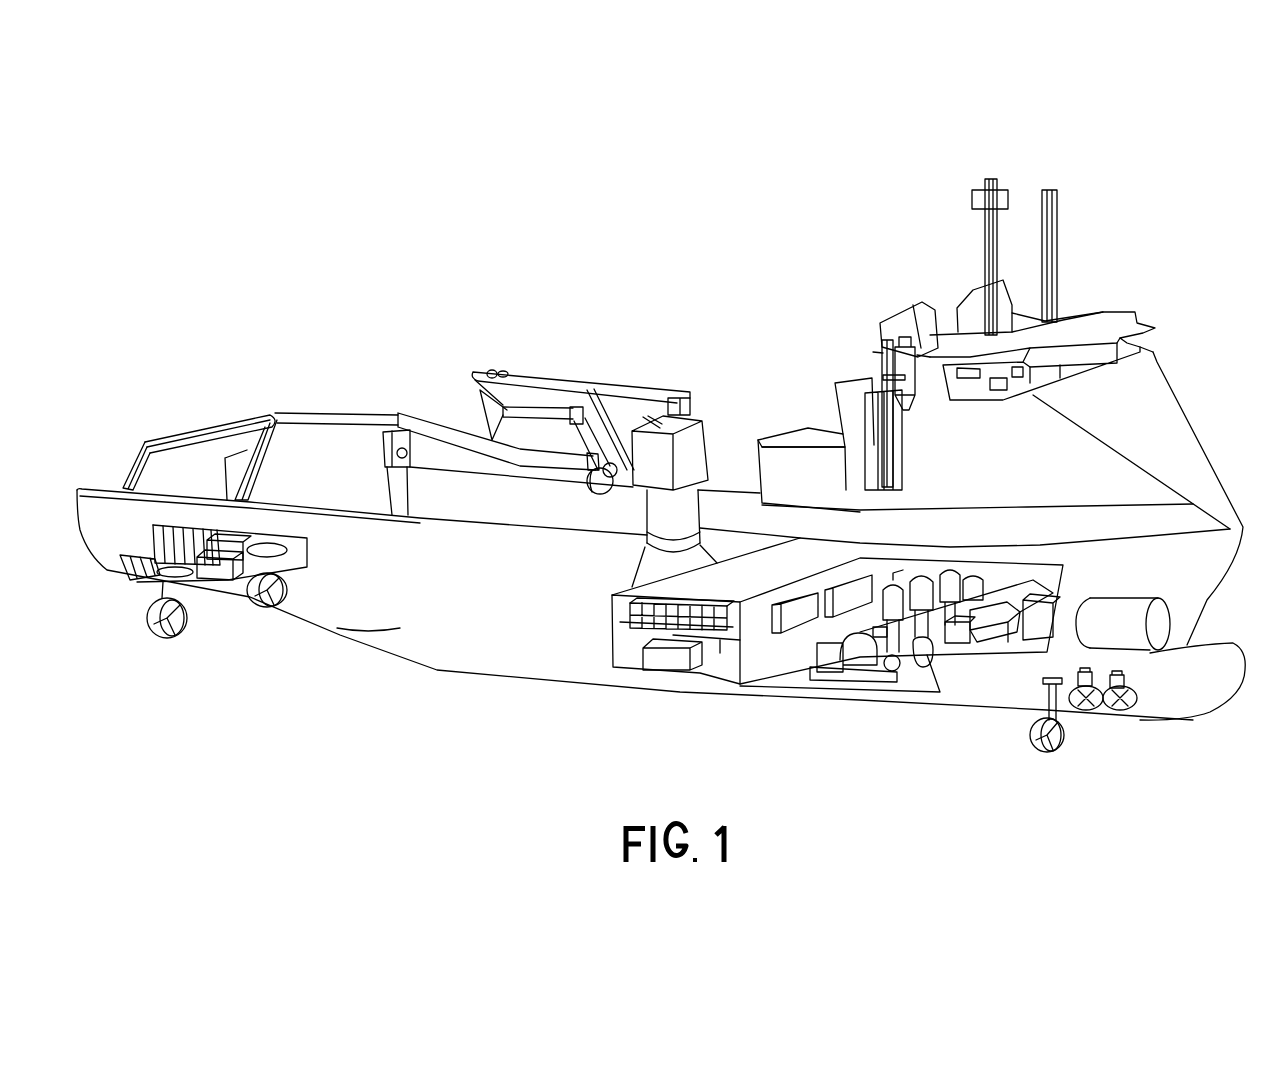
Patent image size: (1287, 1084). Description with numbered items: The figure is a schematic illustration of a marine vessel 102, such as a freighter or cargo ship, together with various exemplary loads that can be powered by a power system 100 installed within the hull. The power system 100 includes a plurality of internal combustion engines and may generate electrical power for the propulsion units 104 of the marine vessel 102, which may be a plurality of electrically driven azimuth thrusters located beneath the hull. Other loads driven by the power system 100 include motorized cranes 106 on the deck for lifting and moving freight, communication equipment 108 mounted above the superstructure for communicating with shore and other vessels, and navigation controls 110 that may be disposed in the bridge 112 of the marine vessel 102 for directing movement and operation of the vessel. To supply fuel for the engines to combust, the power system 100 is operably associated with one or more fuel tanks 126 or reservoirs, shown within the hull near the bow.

The power system 100 is at (797, 673).
The marine vessel 102 is at (661, 500).
The propulsion units 104 is at (152, 633).
The motorized cranes 106 is at (370, 428).
The communication equipment 108 is at (1000, 184).
The navigation controls 110 is at (1018, 383).
The bridge 112 is at (1150, 338).
The fuel tanks 126 is at (1157, 620).